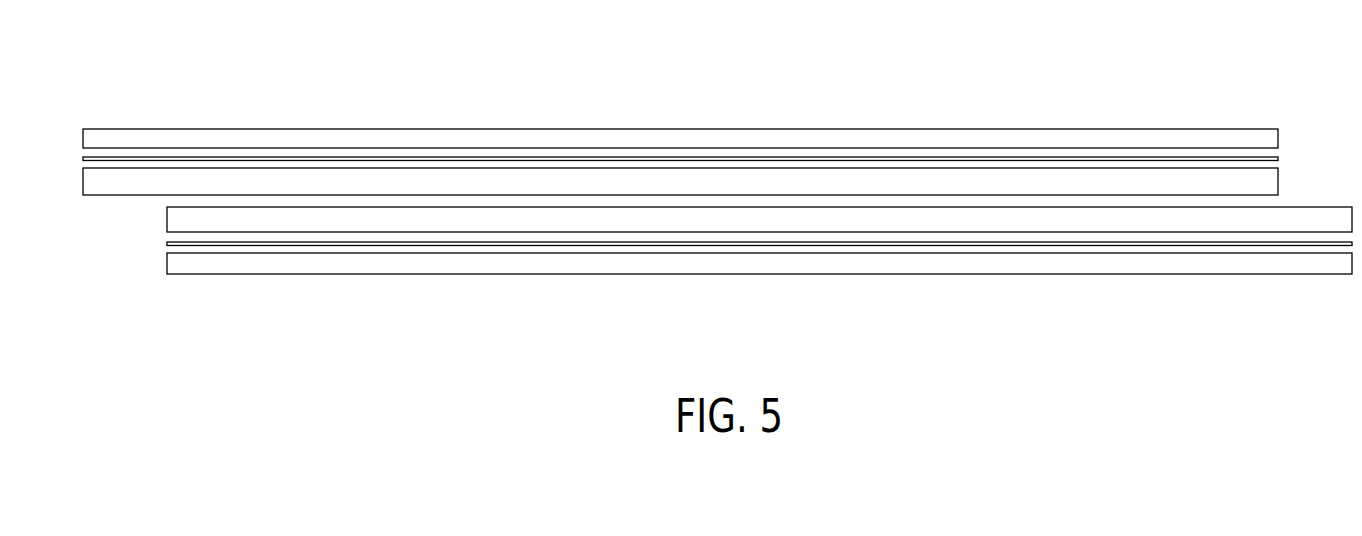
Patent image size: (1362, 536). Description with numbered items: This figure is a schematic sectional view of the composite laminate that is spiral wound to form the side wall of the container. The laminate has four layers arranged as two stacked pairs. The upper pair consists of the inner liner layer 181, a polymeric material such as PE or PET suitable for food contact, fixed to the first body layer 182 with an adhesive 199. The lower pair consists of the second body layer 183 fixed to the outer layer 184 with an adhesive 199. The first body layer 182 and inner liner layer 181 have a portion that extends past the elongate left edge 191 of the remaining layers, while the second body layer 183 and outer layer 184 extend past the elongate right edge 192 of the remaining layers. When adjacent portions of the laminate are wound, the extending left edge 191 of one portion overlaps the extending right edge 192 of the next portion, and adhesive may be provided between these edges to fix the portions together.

The elongate left edge 191 is at (680, 125).
The elongate right edge 192 is at (762, 204).
The inner liner layer 181 is at (745, 142).
The first body layer 182 is at (1047, 185).
The second body layer 183 is at (885, 218).
The outer layer 184 is at (940, 263).
The adhesive 199 is at (595, 158).